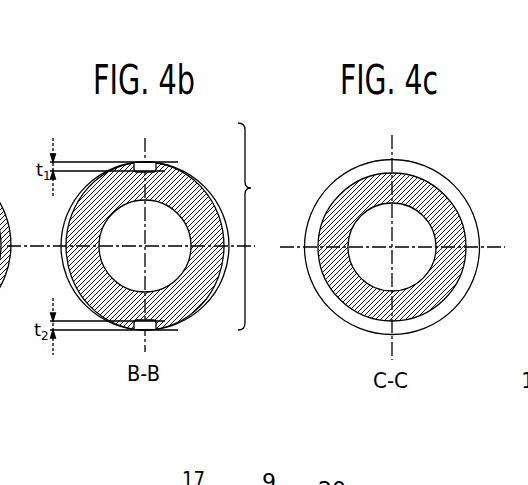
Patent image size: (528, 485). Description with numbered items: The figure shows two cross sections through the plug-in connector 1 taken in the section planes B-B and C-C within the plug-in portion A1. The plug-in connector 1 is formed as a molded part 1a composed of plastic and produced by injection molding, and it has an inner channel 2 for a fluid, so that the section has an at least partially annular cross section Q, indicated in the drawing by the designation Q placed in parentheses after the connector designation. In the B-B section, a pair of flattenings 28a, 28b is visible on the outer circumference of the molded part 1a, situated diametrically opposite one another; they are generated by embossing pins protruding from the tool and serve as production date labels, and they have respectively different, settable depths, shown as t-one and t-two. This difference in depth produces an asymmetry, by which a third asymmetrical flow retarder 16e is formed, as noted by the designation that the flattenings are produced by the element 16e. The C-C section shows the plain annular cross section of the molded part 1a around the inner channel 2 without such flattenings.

In FIG. 4B, the plug-in connector 1 is at (123, 259).
In FIG. 4C, the plug-in connector 1 is at (375, 277).
In FIG. 4B, the molded part 1a is at (72, 288).
In FIG. 4C, the molded part 1a is at (335, 300).
In FIG. 4C, the inner channel 2 is at (418, 238).
In FIG. 4B, the third asymmetrical flow retarder 16e is at (280, 226).
In FIG. 4B, the flattening 28a is at (150, 162).
In FIG. 4B, the flattening 28b is at (168, 345).